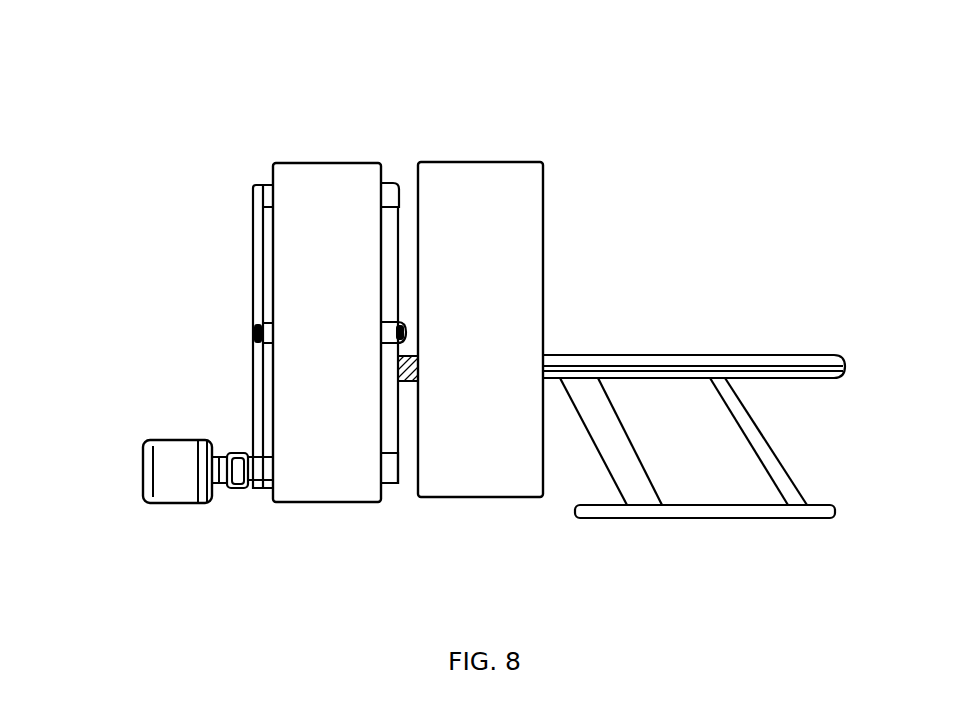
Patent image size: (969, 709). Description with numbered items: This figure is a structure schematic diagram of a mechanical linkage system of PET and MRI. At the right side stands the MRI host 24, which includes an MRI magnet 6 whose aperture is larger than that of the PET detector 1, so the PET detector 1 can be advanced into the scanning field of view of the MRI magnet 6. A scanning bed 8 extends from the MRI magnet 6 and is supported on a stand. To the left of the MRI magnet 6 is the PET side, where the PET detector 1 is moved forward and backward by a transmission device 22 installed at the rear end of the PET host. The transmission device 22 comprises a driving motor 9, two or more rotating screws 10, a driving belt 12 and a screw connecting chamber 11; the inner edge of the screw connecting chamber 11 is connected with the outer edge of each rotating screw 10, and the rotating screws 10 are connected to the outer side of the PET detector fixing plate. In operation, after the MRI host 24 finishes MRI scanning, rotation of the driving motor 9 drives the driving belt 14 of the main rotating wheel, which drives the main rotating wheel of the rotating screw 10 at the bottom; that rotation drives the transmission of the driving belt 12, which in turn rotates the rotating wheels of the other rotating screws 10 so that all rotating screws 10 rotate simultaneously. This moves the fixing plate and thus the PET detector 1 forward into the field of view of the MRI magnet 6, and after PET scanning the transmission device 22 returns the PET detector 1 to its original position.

The PET detector 1 is at (386, 228).
The MRI magnet 6 is at (523, 183).
The scanning bed 8 is at (778, 357).
The driving motor 9 is at (178, 483).
The rotating screws 10 is at (268, 185).
The screw connecting chamber 11 is at (335, 187).
The driving belt 12 is at (253, 257).
The driving belt of the main rotating wheel 14 is at (237, 480).
The transmission device 22 is at (162, 430).
The MRI host 24 is at (523, 138).